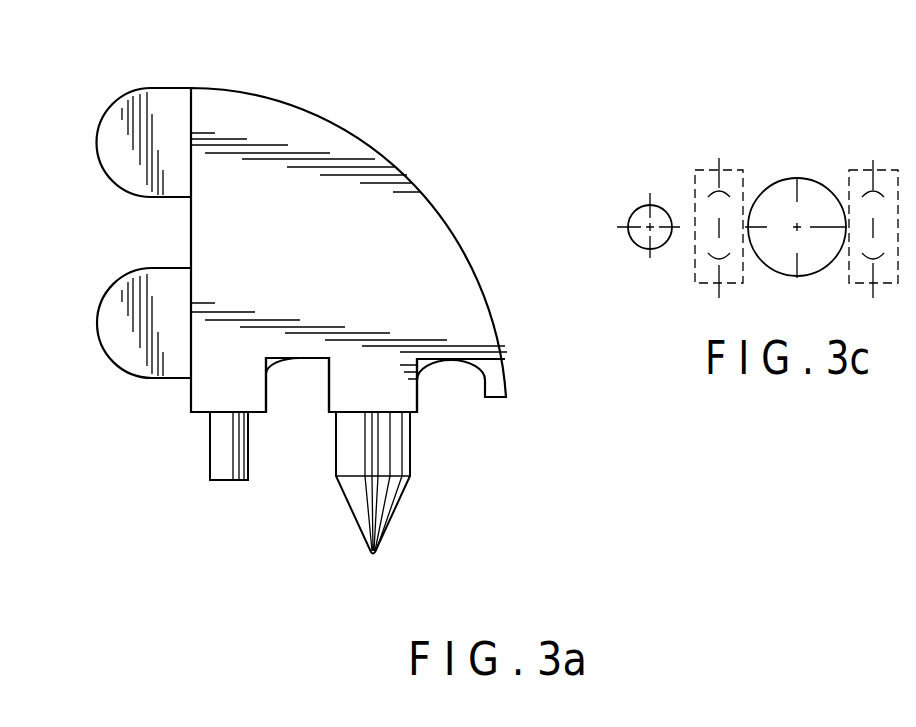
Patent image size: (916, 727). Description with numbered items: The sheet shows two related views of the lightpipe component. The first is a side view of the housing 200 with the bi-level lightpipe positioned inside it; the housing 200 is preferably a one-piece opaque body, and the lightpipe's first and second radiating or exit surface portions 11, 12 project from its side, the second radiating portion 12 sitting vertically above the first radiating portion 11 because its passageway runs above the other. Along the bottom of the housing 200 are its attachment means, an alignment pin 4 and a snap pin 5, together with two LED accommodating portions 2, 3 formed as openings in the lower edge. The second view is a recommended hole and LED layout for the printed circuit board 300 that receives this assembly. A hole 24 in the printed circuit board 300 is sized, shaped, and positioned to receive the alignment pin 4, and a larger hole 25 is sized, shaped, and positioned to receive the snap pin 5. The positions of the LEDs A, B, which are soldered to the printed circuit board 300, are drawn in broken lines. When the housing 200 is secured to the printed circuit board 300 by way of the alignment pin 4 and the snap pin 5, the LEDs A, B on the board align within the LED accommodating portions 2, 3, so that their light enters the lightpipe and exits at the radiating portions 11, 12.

In FIG. 3a, the LED accommodating portion 2 is at (312, 359).
In FIG. 3a, the LED accommodating portion 3 is at (450, 360).
In FIG. 3a, the alignment pin 4 is at (250, 455).
In FIG. 3a, the snap pin 5 is at (393, 520).
In FIG. 3a, the first radiating surface portion 11 is at (100, 328).
In FIG. 3a, the second radiating surface portion 12 is at (103, 117).
In FIG. 3a, the housing 200 is at (364, 158).
In FIG. 3c, the hole 24 is at (641, 213).
In FIG. 3c, the hole 25 is at (795, 202).
In FIG. 3c, the printed circuit board 300 is at (744, 165).
In FIG. 3c, the LED A is at (733, 168).
In FIG. 3c, the LED B is at (890, 165).